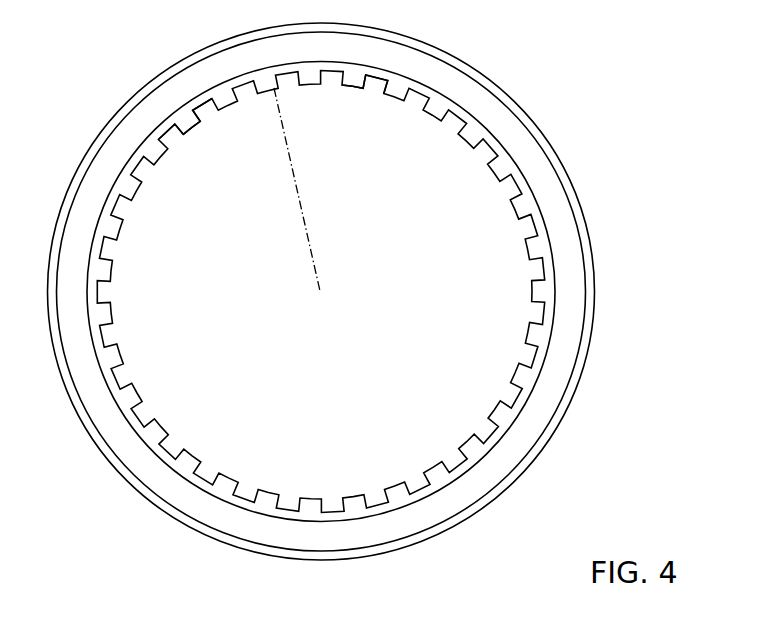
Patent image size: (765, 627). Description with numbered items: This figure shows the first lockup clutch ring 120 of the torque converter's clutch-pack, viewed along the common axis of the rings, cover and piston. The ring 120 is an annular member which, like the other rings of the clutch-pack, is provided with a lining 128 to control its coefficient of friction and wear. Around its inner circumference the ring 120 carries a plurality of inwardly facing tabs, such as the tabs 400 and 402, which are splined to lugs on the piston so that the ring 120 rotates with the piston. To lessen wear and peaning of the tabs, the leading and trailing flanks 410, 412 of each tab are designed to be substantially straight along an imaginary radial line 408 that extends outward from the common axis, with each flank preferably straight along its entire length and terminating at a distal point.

The first ring 120 is at (515, 102).
The lining 128 is at (562, 215).
The tab 400 is at (187, 128).
The tab 402 is at (353, 88).
The imaginary radial line 408 is at (304, 215).
The leading flank 410 is at (190, 116).
The trailing flank 412 is at (168, 132).